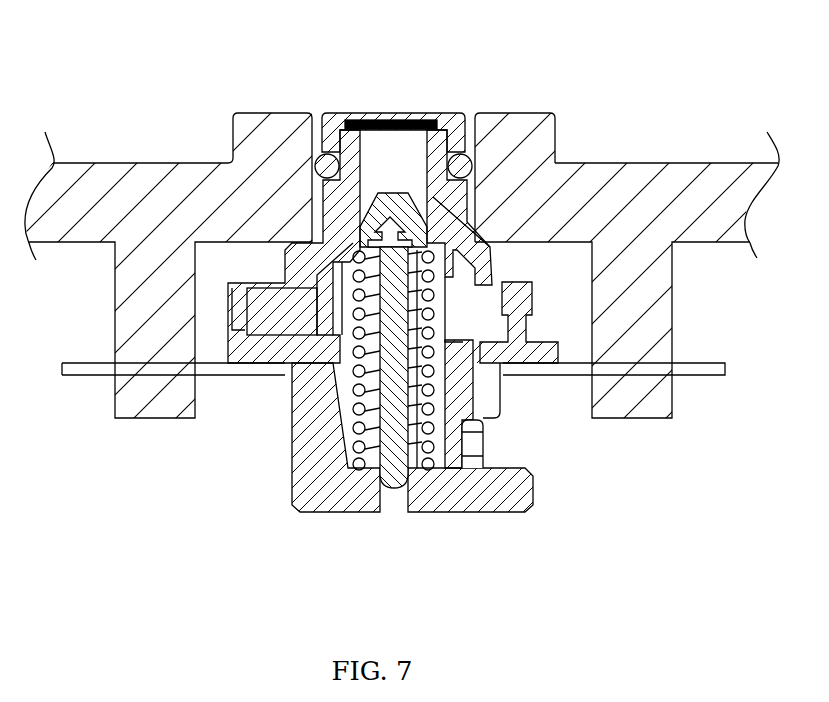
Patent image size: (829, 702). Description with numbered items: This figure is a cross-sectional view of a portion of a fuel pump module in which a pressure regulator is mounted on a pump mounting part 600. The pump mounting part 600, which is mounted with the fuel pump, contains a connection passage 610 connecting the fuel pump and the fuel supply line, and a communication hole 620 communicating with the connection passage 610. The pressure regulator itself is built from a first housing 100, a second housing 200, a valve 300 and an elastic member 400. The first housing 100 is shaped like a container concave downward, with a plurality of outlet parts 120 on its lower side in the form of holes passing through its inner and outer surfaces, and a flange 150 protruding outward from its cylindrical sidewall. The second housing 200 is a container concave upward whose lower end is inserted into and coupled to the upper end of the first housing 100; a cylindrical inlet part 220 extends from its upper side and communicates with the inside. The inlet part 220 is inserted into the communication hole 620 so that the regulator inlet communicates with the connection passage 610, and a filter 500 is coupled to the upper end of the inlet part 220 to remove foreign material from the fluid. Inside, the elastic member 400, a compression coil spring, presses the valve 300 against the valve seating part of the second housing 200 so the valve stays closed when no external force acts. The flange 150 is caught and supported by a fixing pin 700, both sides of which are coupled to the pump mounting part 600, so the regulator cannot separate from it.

The first housing 100 is at (293, 458).
The outlet part 120 is at (485, 442).
The flange 150 is at (540, 330).
The second housing 200 is at (262, 273).
The inlet part 220 is at (505, 152).
The valve 300 is at (390, 492).
The elastic member 400 is at (337, 470).
The filter 500 is at (452, 112).
The pump mounting part 600 is at (690, 185).
The connection passage 610 is at (616, 162).
The communication hole 620 is at (318, 162).
The fixing pin 700 is at (700, 390).